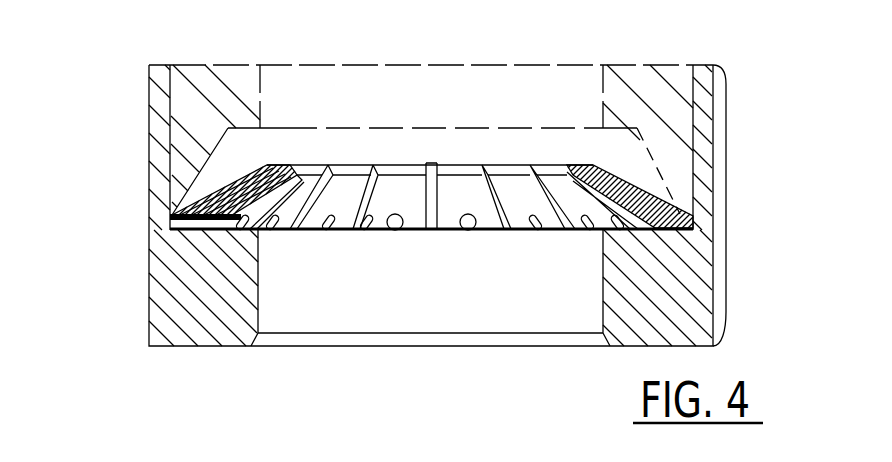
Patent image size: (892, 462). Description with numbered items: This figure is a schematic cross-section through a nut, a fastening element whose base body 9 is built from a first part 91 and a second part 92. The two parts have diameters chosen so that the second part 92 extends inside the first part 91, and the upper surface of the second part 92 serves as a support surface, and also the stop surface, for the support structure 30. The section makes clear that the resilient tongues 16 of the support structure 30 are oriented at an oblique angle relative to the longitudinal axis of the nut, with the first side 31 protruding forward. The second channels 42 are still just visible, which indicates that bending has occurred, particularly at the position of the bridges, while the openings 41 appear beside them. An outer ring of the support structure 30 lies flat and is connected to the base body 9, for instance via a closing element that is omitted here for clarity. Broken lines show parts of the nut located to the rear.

The base body 9 is at (680, 288).
The resilient tongues 16 is at (502, 128).
The support structure 30 is at (180, 217).
The first side 31 is at (303, 170).
The slot opening 41 is at (381, 229).
The second channels 42 is at (467, 230).
The first part 91 is at (708, 140).
The second part 92 is at (160, 295).